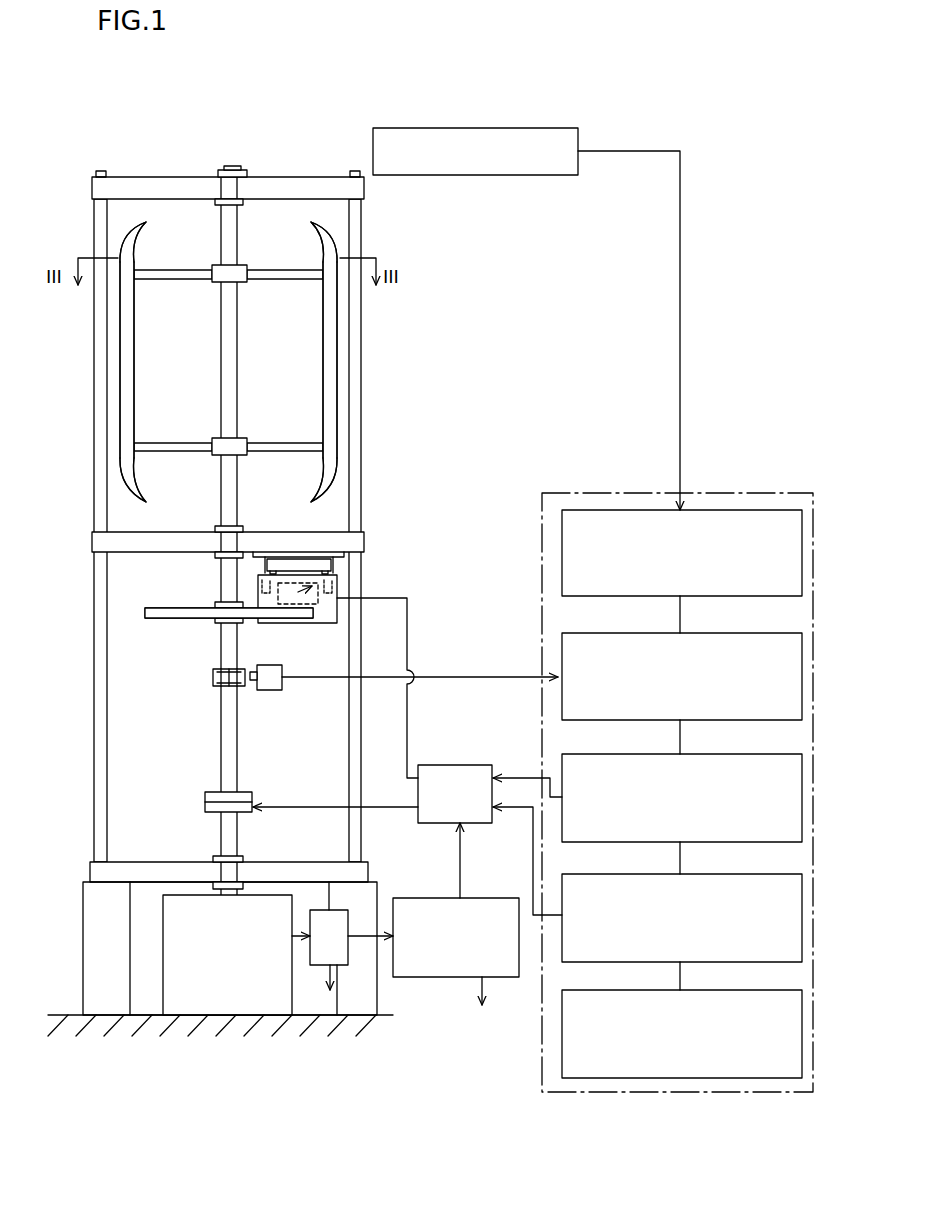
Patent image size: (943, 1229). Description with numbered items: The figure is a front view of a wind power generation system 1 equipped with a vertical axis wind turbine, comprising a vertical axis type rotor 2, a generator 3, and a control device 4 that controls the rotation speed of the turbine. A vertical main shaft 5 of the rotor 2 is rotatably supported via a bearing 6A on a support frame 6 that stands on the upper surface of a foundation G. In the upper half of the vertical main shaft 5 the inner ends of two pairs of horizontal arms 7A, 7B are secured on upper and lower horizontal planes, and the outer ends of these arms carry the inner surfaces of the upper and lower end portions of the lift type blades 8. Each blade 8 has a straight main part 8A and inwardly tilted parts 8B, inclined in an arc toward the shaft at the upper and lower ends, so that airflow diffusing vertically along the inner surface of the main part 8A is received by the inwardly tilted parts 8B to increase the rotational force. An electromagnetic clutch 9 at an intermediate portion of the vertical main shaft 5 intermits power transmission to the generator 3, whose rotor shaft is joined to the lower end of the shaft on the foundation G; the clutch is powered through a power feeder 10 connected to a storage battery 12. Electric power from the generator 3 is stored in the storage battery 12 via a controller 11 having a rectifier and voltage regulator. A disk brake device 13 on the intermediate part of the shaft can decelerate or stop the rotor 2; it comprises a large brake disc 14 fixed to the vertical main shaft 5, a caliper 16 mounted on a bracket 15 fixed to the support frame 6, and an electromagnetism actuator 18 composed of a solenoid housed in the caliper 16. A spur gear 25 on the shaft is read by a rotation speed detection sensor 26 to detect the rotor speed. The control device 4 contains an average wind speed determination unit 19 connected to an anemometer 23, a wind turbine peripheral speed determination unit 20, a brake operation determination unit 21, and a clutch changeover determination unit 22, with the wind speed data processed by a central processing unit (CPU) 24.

The wind power generation system 1 is at (386, 335).
The rotor 2 is at (176, 500).
The generator 3 is at (163, 965).
The control device 4 is at (653, 811).
The vertical main shaft 5 is at (238, 738).
The support frame 6 is at (94, 694).
The bearing 6A is at (240, 171).
The horizontal arm 7A is at (178, 268).
The horizontal arm 7B is at (175, 443).
The lift type blade 8 is at (121, 393).
The main part 8A is at (121, 343).
The inwardly tilted part 8B is at (125, 228).
The electromagnetic clutch 9 is at (213, 791).
The power feeder 10 is at (455, 765).
The controller 11 is at (312, 963).
The storage battery 12 is at (435, 978).
The disk brake device 13 is at (285, 586).
The brake disc 14 is at (168, 620).
The bracket 15 is at (318, 558).
The caliper 16 is at (340, 583).
The electromagnetism actuator 18 is at (331, 566).
The average wind speed determination unit 19 is at (759, 510).
The wind turbine peripheral speed determination unit 20 is at (745, 633).
The brake operation determination unit 21 is at (747, 754).
The clutch changeover determination unit 22 is at (747, 874).
The anemometer 23 is at (432, 127).
The central processing unit (CPU) 24 is at (770, 1079).
The spur gear 25 is at (212, 676).
The rotation speed detection sensor 26 is at (272, 690).
The foundation G is at (82, 945).